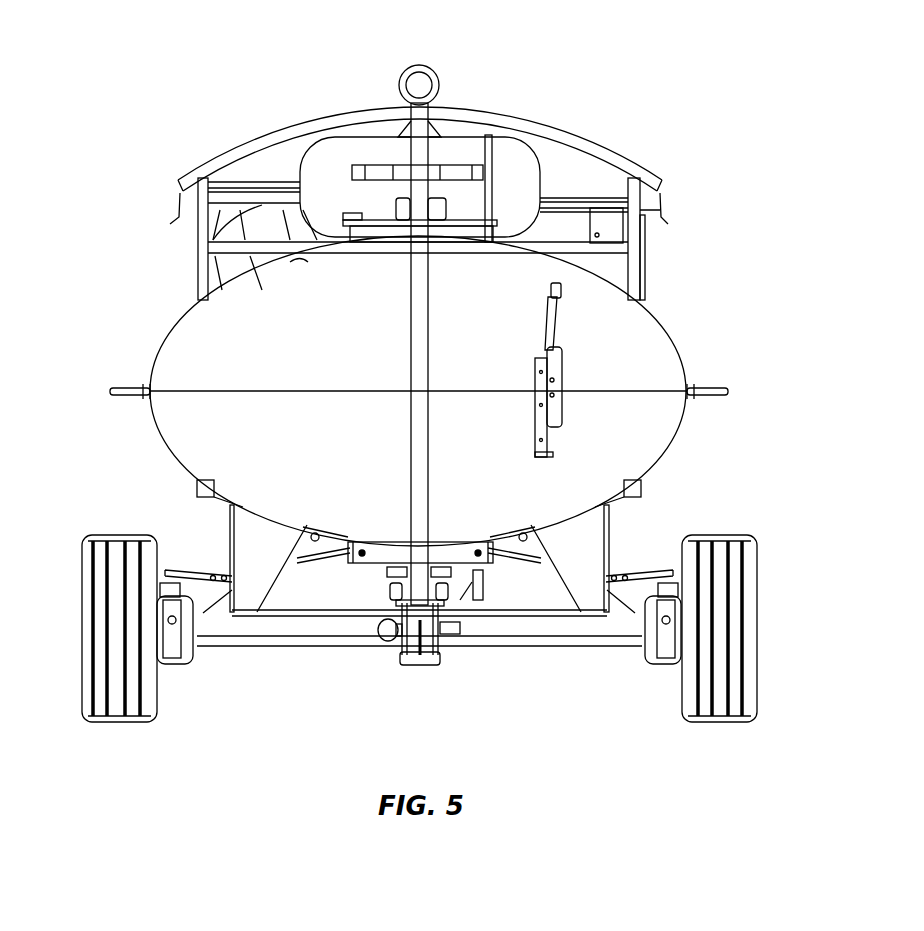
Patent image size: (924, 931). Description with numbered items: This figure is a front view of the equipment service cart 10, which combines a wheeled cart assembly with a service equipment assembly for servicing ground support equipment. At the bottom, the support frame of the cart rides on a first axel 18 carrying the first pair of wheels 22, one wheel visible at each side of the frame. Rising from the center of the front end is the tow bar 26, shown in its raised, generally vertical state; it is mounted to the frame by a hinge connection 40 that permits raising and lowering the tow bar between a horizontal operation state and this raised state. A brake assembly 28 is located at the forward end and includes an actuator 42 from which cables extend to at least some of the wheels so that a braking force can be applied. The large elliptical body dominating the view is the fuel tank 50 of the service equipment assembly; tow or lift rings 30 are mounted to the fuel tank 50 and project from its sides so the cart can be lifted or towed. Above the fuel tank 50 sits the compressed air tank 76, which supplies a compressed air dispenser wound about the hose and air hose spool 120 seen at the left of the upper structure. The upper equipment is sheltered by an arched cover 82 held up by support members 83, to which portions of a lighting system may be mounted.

The equipment service cart 10 is at (812, 172).
The first axel 18 is at (577, 628).
The first pair of wheels 22 is at (85, 655).
The tow bar 26 is at (436, 76).
The brake assembly 28 is at (530, 363).
The lift rings 30 is at (128, 391).
The hinge connection 40 is at (419, 665).
The actuator 42 is at (563, 297).
The fuel tank 50 is at (672, 461).
The compressed air tank 76 is at (517, 160).
The cover 82 is at (612, 157).
The support members 83 is at (637, 258).
The hose and air hose spool 120 is at (228, 236).